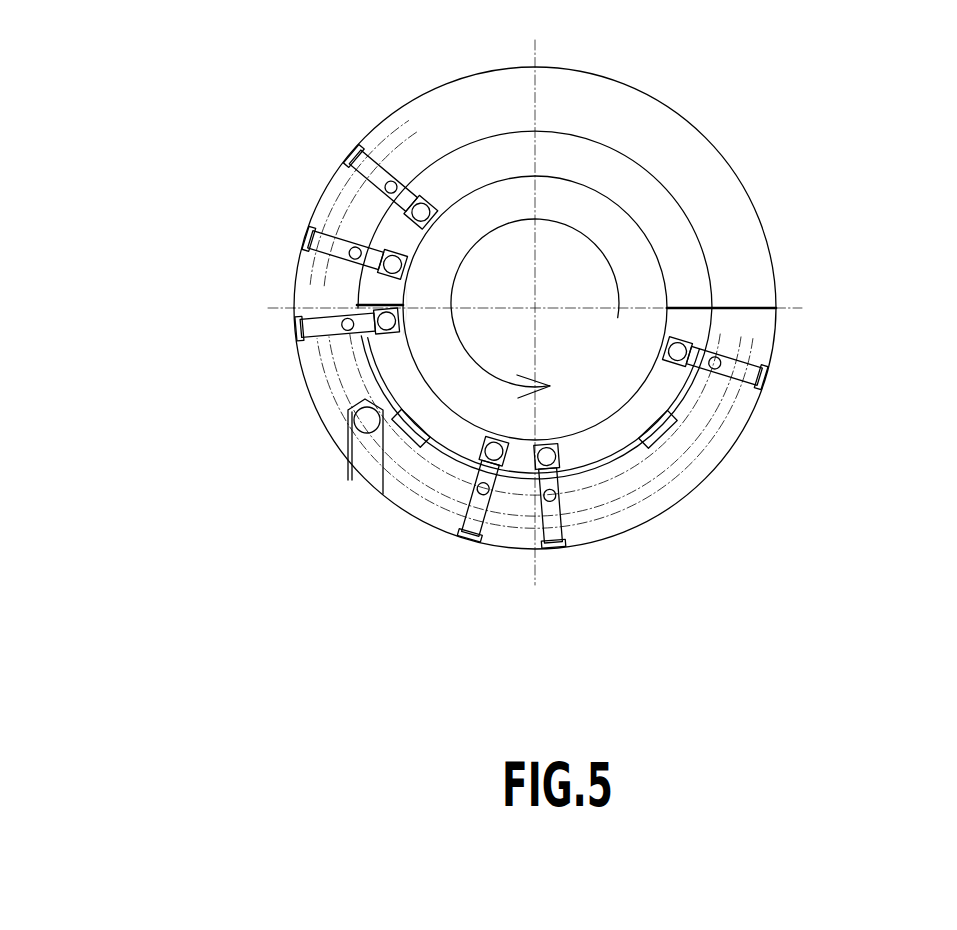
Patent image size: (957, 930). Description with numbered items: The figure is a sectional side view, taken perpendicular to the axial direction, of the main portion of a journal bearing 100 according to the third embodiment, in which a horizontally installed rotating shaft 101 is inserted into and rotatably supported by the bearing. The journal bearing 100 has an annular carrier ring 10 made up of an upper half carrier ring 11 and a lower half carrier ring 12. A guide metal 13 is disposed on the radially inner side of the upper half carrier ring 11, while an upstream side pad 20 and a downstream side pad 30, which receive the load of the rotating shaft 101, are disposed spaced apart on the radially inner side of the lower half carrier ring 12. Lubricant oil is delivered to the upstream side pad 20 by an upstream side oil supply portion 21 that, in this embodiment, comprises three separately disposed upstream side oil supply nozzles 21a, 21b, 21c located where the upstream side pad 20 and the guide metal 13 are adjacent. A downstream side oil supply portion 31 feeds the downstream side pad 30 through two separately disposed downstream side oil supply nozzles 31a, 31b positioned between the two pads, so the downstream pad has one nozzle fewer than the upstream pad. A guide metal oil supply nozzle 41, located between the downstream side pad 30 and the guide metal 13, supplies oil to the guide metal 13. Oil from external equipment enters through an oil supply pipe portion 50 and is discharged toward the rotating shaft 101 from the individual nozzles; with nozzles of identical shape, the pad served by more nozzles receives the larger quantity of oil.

The carrier ring 10 is at (877, 222).
The upper half carrier ring 11 is at (762, 262).
The lower half carrier ring 12 is at (765, 345).
The guide metal 13 is at (592, 149).
The rotating shaft 101 is at (623, 237).
The upstream side pad 20 is at (385, 366).
The upstream side oil supply portion 21 is at (195, 198).
The upstream side oil supply nozzle 21a is at (388, 325).
The upstream side oil supply nozzle 21b is at (390, 266).
The upstream side oil supply nozzle 21c is at (420, 212).
The downstream side pad 30 is at (618, 435).
The downstream side oil supply portion 31 is at (455, 618).
The downstream side oil supply nozzle 31a is at (560, 545).
The downstream side oil supply nozzle 31b is at (482, 545).
The guide metal oil supply nozzle 41 is at (687, 355).
The oil supply pipe portion 50 is at (367, 433).
The journal bearing 100 is at (780, 565).